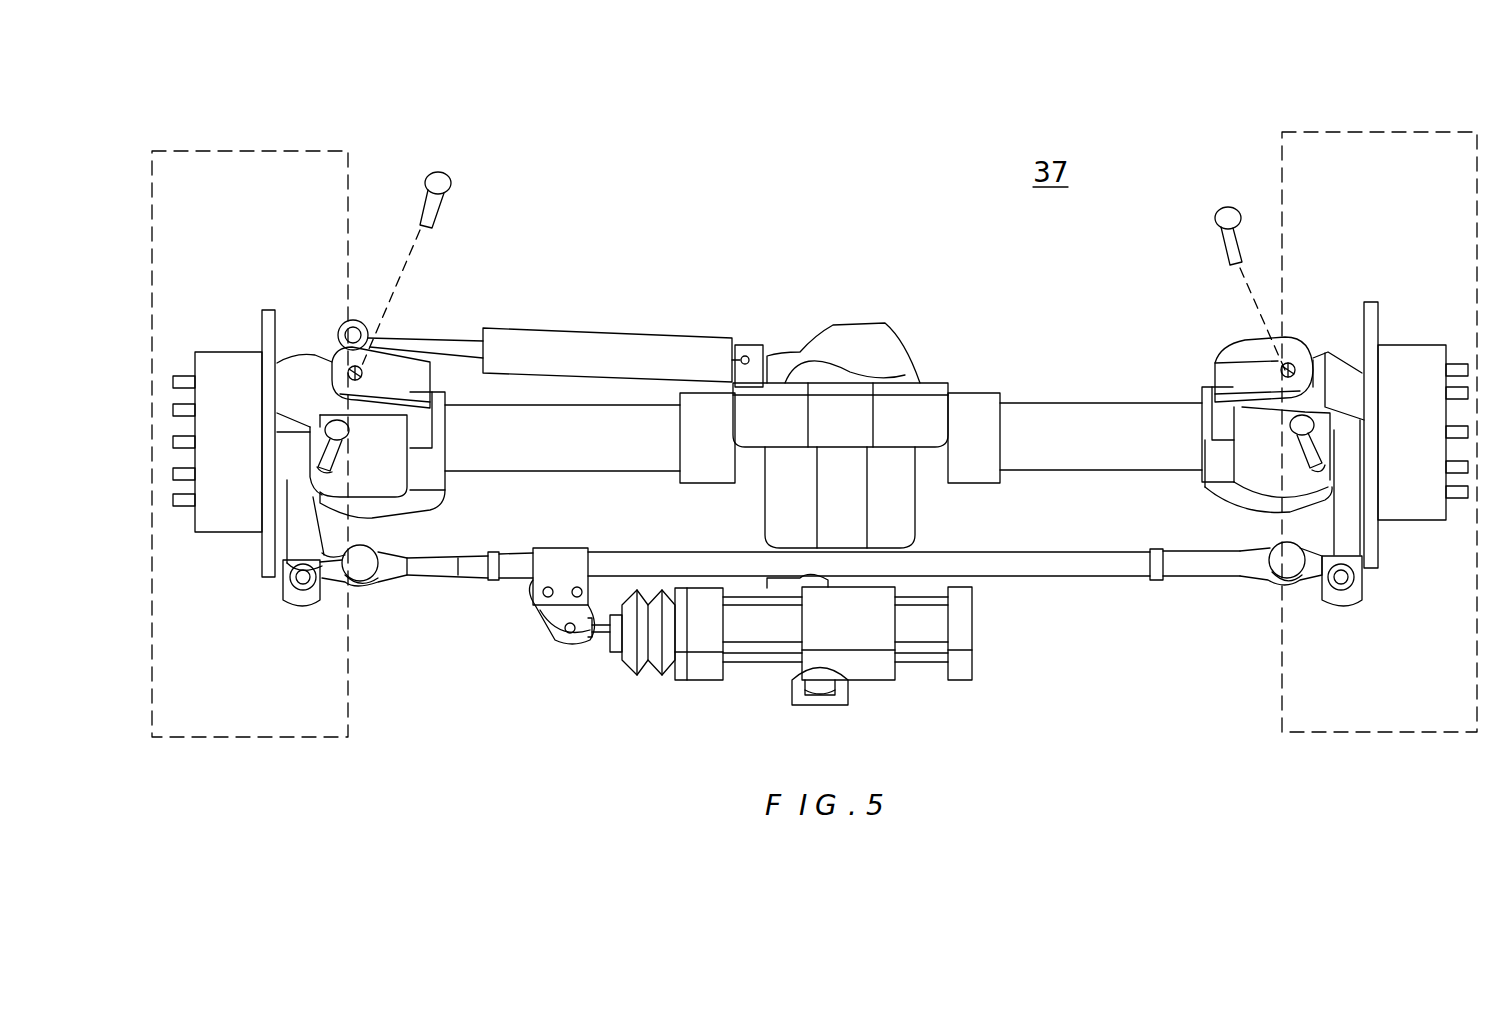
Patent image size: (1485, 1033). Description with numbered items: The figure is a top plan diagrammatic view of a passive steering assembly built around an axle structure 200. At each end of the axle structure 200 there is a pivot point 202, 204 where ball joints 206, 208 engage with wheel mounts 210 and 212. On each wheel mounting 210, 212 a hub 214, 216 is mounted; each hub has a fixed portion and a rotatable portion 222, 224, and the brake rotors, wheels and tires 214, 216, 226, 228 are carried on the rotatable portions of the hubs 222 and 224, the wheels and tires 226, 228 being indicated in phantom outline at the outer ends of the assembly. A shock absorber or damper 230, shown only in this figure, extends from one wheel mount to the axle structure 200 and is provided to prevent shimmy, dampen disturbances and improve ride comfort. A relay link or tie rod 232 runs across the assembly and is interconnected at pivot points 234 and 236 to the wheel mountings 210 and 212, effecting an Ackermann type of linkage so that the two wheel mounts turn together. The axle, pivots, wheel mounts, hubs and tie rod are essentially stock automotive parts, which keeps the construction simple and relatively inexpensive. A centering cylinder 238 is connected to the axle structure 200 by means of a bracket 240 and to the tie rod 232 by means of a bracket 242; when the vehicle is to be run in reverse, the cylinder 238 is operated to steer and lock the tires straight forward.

The axle structure 200 is at (982, 388).
The pivot point 202 is at (370, 368).
The pivot point 204 is at (1212, 372).
The ball joint 206 is at (448, 180).
The ball joint 208 is at (1218, 215).
The wheel mount 210 is at (300, 375).
The wheel mount 212 is at (1340, 358).
The hub 214 is at (233, 310).
The hub 216 is at (1410, 342).
The rotatable portion 222 is at (245, 516).
The rotatable portion 224 is at (1408, 497).
The wheel and tire 226 is at (232, 150).
The wheel and tire 228 is at (1352, 132).
The shock absorber or damper 230 is at (628, 347).
The relay link or tie rod 232 is at (440, 568).
The pivot point 234 is at (357, 570).
The pivot point 236 is at (1280, 562).
The centering cylinder 238 is at (760, 672).
The bracket 240 is at (780, 548).
The bracket 242 is at (558, 617).